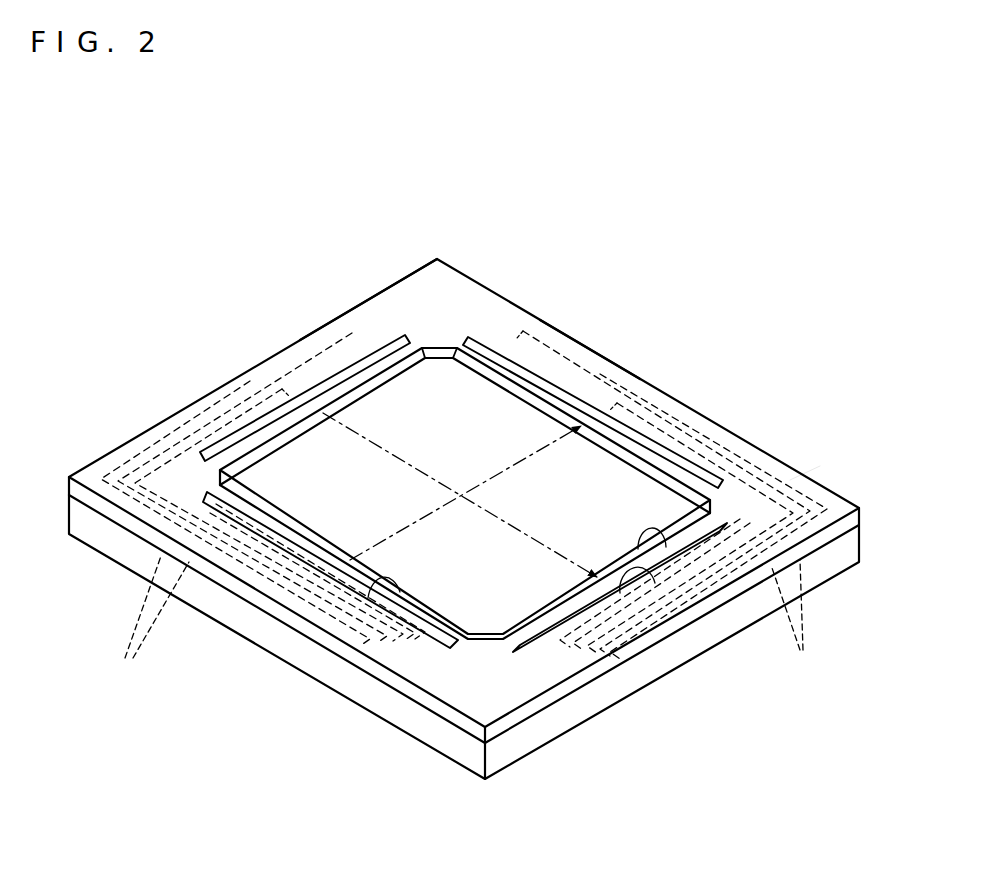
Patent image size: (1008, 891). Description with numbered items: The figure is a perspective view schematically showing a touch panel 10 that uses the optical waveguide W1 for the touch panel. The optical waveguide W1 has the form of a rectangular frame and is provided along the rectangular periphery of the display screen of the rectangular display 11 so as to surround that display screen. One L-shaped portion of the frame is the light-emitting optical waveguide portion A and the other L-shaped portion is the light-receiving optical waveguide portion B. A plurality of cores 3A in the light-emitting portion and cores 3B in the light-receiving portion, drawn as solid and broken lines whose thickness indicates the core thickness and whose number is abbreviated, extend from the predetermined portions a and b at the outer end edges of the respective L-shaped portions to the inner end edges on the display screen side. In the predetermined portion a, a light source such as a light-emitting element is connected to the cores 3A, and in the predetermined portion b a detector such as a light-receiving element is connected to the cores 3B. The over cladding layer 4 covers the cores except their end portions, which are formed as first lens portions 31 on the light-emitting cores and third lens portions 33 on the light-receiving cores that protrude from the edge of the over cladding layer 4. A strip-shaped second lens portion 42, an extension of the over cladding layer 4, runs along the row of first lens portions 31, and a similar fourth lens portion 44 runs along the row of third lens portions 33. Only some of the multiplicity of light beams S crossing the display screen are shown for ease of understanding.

The touch panel 10 is at (358, 248).
The display 11 is at (442, 382).
The over cladding layer 4 is at (562, 345).
The first lens portion 31 is at (304, 397).
The third lens portion 33 is at (597, 413).
The second lens portion 42 is at (341, 396).
The fourth lens portion 44 is at (654, 470).
The cores 3A is at (146, 622).
The cores 3B is at (798, 619).
The light-emitting optical waveguide portion A is at (134, 441).
The light-receiving optical waveguide portion B is at (808, 476).
The light beams S is at (432, 480).
The optical waveguide for the touch panel W1 is at (422, 261).
The predetermined portion a is at (371, 656).
The predetermined portion b is at (613, 656).